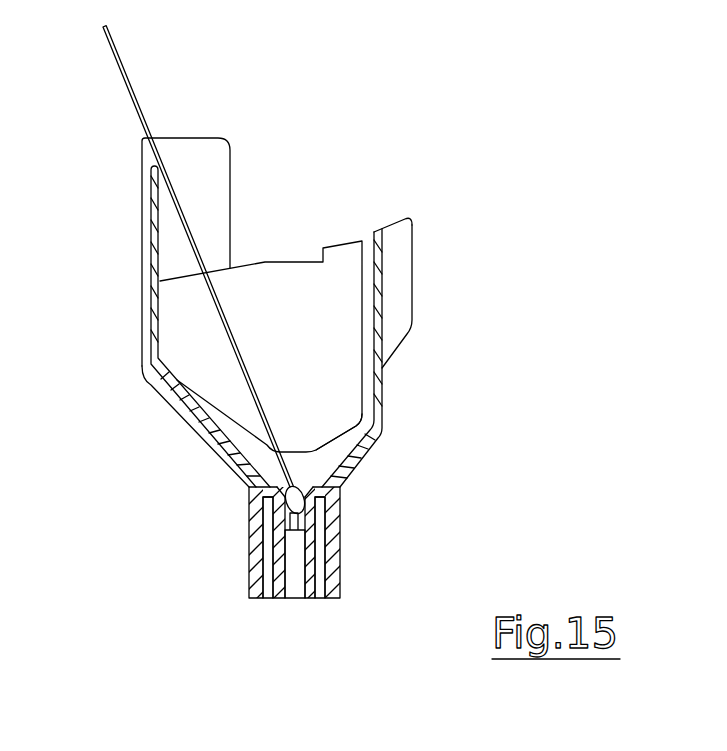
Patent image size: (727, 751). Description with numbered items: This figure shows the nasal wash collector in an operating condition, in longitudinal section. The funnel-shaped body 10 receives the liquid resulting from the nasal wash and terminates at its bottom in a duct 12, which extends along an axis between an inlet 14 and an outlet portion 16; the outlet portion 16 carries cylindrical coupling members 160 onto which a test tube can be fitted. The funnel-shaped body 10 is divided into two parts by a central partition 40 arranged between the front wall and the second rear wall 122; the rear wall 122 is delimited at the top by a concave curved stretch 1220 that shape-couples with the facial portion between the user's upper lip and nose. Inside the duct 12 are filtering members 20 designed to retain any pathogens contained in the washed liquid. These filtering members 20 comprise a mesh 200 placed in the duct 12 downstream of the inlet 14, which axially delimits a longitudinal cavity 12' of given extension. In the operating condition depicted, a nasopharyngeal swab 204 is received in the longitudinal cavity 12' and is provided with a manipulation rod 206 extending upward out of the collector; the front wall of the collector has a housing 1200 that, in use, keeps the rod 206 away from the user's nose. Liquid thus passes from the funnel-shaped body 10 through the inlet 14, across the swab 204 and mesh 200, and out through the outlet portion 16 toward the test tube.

The manipulation rod 206 is at (118, 44).
The housing 1200 is at (133, 150).
The central partition 40 is at (272, 300).
The concave curved stretch 1220 is at (430, 165).
The second rear wall 122 is at (398, 295).
The inlet 14 is at (330, 457).
The longitudinal cavity 12' is at (224, 460).
The funnel-shaped body 10 is at (358, 450).
The filtering members 20 is at (236, 476).
The nasopharyngeal swab 204 is at (273, 498).
The mesh 200 is at (288, 514).
The cylindrical coupling members 160 is at (339, 523).
The duct 12 is at (295, 559).
The outlet portion 16 is at (289, 608).